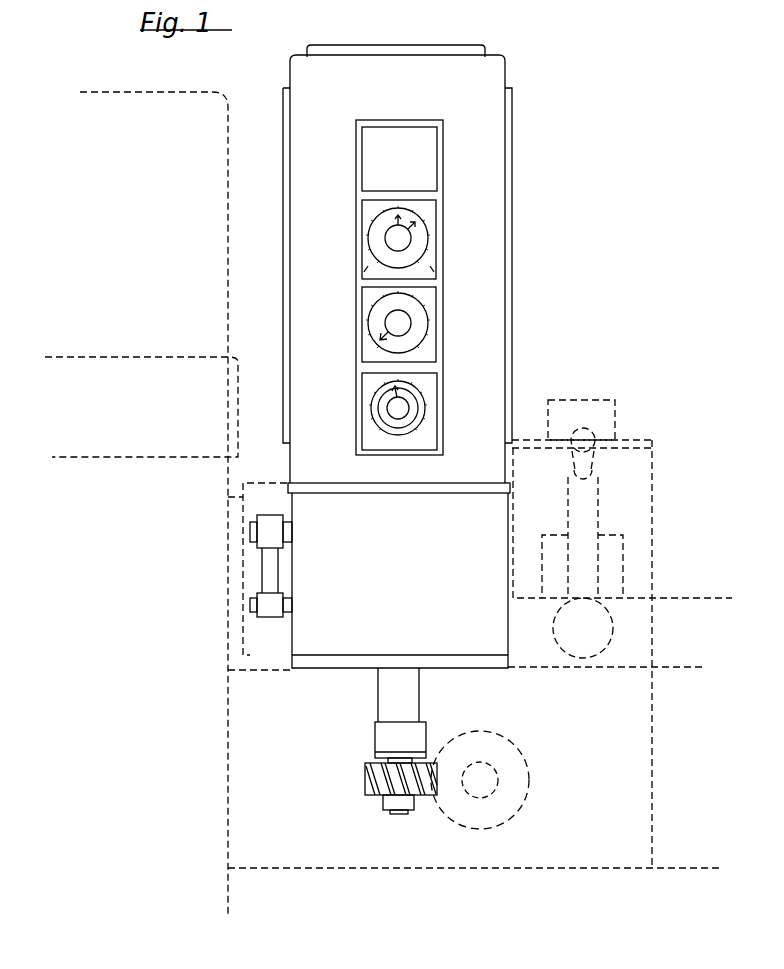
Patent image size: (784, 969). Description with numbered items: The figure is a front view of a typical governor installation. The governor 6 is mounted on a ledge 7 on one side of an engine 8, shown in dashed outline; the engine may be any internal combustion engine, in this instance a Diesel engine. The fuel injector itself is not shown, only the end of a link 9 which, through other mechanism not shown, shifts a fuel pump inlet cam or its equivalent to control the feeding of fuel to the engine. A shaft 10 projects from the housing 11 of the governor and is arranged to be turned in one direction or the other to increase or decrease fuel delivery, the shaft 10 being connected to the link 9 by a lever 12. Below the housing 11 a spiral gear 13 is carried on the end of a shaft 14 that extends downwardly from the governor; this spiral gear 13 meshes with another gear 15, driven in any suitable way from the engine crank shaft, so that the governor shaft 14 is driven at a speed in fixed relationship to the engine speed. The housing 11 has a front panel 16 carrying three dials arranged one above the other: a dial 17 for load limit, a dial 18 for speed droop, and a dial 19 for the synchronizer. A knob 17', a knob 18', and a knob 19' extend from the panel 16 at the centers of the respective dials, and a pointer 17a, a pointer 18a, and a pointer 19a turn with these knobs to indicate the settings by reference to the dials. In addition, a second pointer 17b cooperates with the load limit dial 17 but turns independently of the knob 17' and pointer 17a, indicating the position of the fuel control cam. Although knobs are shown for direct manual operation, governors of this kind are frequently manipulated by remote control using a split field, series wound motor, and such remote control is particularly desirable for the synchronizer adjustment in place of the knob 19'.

The governor 6 is at (504, 234).
The ledge 7 is at (276, 668).
The engine 8 is at (228, 248).
The link 9 is at (288, 607).
The shaft 10 is at (290, 528).
The housing 11 is at (400, 580).
The lever 12 is at (273, 575).
The spiral gear 13 is at (365, 783).
The shaft 14 is at (398, 762).
The gear 15 is at (532, 782).
The front panel 16 is at (444, 317).
The dial 17 is at (375, 239).
The knob 17' is at (437, 240).
The pointer 17a is at (418, 223).
The second pointer 17b is at (400, 223).
The dial 18 is at (374, 324).
The knob 18' is at (437, 304).
The pointer 18a is at (383, 338).
The dial 19 is at (376, 412).
The knob 19' is at (438, 403).
The pointer 19a is at (393, 388).